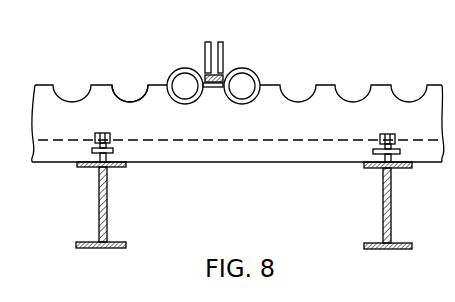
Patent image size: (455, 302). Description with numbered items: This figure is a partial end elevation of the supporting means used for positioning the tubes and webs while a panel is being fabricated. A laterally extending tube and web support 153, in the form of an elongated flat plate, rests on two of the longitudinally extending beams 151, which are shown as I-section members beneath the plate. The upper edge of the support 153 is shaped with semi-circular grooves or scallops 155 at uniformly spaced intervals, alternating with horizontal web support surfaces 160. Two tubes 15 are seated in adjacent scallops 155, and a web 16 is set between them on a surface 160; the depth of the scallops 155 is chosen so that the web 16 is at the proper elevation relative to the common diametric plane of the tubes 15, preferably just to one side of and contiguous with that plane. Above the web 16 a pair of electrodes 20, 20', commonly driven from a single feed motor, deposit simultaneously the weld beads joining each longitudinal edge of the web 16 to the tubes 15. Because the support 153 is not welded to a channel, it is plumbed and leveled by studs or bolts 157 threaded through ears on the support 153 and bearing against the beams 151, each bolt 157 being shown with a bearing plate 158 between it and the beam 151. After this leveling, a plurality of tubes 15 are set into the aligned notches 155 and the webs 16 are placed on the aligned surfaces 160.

The horizontal web support surface 160 is at (100, 83).
The semi-circular groove 155 is at (120, 92).
The tube and web support 153 is at (275, 150).
The tube 15 is at (177, 102).
The web 16 is at (215, 87).
The electrode 20 is at (199, 49).
The electrode 20' is at (249, 44).
The stud or bolt 157 is at (95, 135).
The washer plate 158 is at (92, 150).
The beam 151 is at (108, 210).